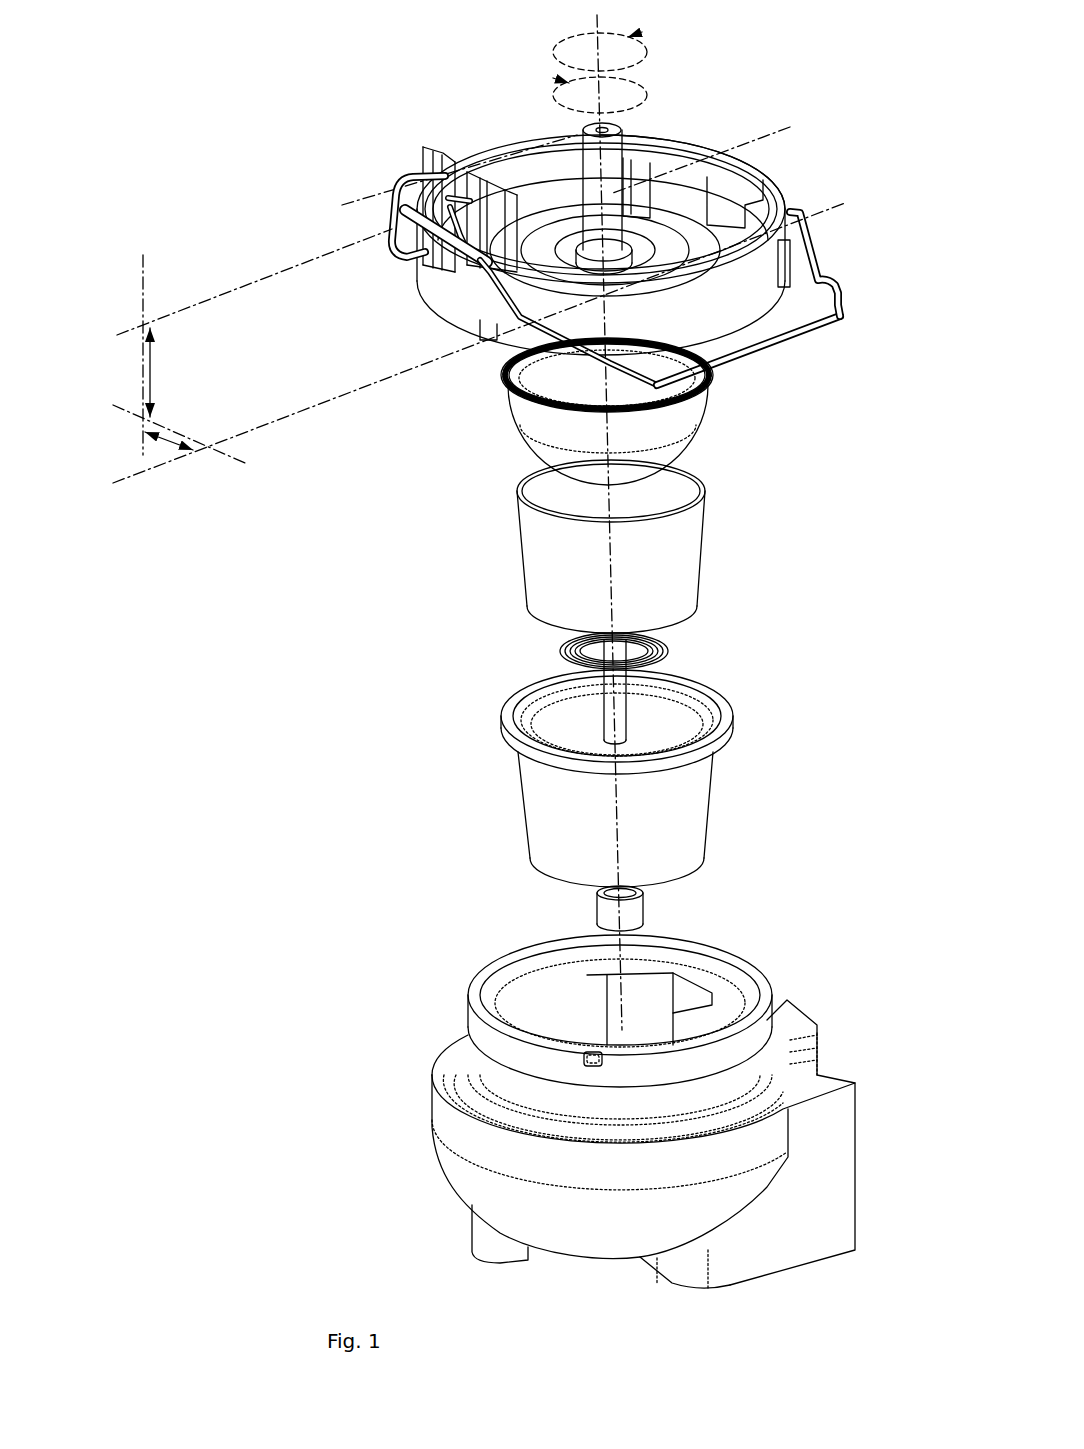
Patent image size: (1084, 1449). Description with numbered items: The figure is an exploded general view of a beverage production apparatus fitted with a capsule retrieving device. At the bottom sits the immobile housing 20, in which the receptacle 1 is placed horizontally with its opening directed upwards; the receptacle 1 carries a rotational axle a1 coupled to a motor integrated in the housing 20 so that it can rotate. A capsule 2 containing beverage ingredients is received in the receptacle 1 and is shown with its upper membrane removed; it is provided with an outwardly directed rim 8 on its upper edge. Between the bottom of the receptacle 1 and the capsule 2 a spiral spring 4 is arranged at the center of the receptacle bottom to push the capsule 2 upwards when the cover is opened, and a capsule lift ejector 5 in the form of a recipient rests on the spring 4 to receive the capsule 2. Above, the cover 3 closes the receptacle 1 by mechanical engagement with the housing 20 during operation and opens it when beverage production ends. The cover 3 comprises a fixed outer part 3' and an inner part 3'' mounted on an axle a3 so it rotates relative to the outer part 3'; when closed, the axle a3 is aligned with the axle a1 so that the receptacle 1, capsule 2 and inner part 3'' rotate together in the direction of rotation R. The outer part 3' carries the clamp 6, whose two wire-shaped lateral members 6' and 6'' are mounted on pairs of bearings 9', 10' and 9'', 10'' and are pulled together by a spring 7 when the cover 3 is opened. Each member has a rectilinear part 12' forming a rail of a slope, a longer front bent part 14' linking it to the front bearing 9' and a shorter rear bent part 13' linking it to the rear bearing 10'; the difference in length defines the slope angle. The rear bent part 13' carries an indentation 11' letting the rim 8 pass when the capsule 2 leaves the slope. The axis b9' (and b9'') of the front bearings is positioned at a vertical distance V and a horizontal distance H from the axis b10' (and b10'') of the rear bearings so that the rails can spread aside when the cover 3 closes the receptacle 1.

The receptacle 1 is at (510, 700).
The capsule 2 is at (477, 411).
The cover 3 is at (526, 236).
The outer part of the cover 3' is at (699, 129).
The inner part of the cover 3'' is at (638, 152).
The spring 4 is at (560, 658).
The capsule lift ejector 5 is at (523, 528).
The clamp 6 is at (570, 253).
The lateral member of the clamp 6' is at (831, 254).
The lateral member of the clamp 6'' is at (382, 241).
The spring 7 is at (432, 237).
The rim 8 is at (498, 368).
The front bearing 9' is at (515, 218).
The front bearing 9'' is at (371, 172).
The rear bearing 10' is at (772, 178).
The rear bearing 10'' is at (680, 148).
The indentation 11' is at (872, 301).
The rectilinear part 12' is at (775, 350).
The rear bent part 13' is at (863, 248).
The front bent part 14' is at (575, 322).
The housing 20 is at (483, 1030).
The rotational axle a1 is at (607, 907).
The axle a3 is at (580, 133).
The axis of the front bearing b9' is at (234, 286).
The axis of the front bearing b9'' is at (440, 177).
The axis of the rear bearing b10' is at (470, 355).
The axis of the rear bearing b10'' is at (723, 143).
The direction of rotation R is at (581, 72).
The vertical distance V is at (162, 372).
The horizontal distance H is at (169, 449).